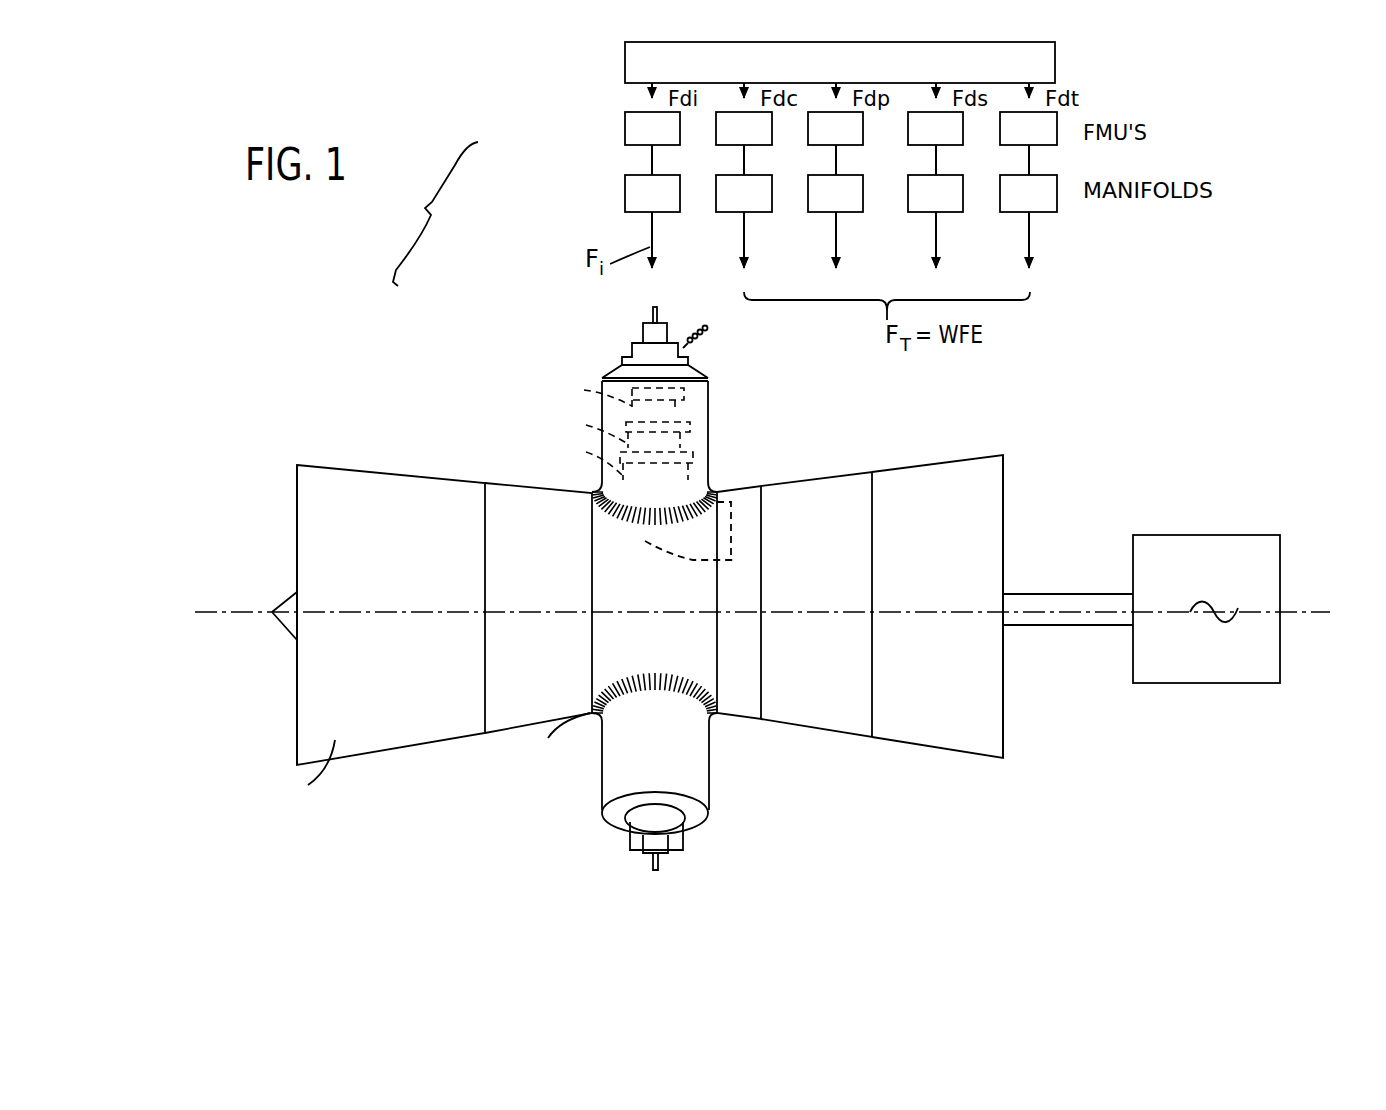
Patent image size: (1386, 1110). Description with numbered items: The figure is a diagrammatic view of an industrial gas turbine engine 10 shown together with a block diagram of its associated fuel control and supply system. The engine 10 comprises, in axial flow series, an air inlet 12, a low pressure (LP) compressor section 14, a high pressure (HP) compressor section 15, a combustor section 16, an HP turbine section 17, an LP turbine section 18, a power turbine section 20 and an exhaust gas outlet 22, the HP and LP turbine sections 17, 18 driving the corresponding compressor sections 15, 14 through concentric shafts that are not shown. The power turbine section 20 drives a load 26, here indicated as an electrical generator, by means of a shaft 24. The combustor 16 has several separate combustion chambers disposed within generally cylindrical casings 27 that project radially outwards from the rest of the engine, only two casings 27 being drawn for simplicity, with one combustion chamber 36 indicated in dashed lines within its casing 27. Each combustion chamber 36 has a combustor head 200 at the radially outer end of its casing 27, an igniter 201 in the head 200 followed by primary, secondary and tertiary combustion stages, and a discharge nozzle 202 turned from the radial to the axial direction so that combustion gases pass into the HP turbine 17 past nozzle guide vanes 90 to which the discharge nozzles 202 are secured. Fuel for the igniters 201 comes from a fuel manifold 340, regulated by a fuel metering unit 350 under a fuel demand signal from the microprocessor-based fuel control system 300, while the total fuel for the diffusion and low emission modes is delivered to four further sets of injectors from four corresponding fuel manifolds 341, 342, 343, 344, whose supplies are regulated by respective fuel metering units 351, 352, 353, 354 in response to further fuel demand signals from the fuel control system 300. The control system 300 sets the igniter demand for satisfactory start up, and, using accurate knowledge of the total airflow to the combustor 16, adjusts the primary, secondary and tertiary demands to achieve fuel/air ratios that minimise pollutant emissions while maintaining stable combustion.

The industrial gas turbine engine 10 is at (378, 340).
The air inlet 12 is at (297, 522).
The low pressure (LP) compressor section 14 is at (397, 562).
The high pressure (HP) compressor section 15 is at (527, 562).
The combustor section 16 is at (580, 798).
The HP turbine section 17 is at (738, 695).
The LP turbine section 18 is at (829, 598).
The power turbine section 20 is at (945, 598).
The exhaust gas outlet 22 is at (1003, 478).
The shaft 24 is at (1022, 625).
The load 26 is at (1280, 555).
The casings 27 is at (710, 433).
The combustion chamber 36 is at (636, 541).
The nozzle guide vanes 90 is at (733, 548).
The combustor head 200 is at (622, 344).
The igniter 201 is at (685, 360).
The discharge nozzle 202 is at (695, 562).
The fuel control system 300 is at (840, 62).
The fuel manifold 340 is at (652, 193).
The fuel manifold 341 is at (744, 193).
The fuel manifold 342 is at (835, 193).
The fuel manifold 343 is at (935, 193).
The fuel manifold 344 is at (1028, 193).
The fuel metering unit 350 is at (652, 128).
The fuel metering unit 351 is at (744, 128).
The fuel metering unit 352 is at (835, 128).
The fuel metering unit 353 is at (935, 128).
The fuel metering unit 354 is at (1028, 128).